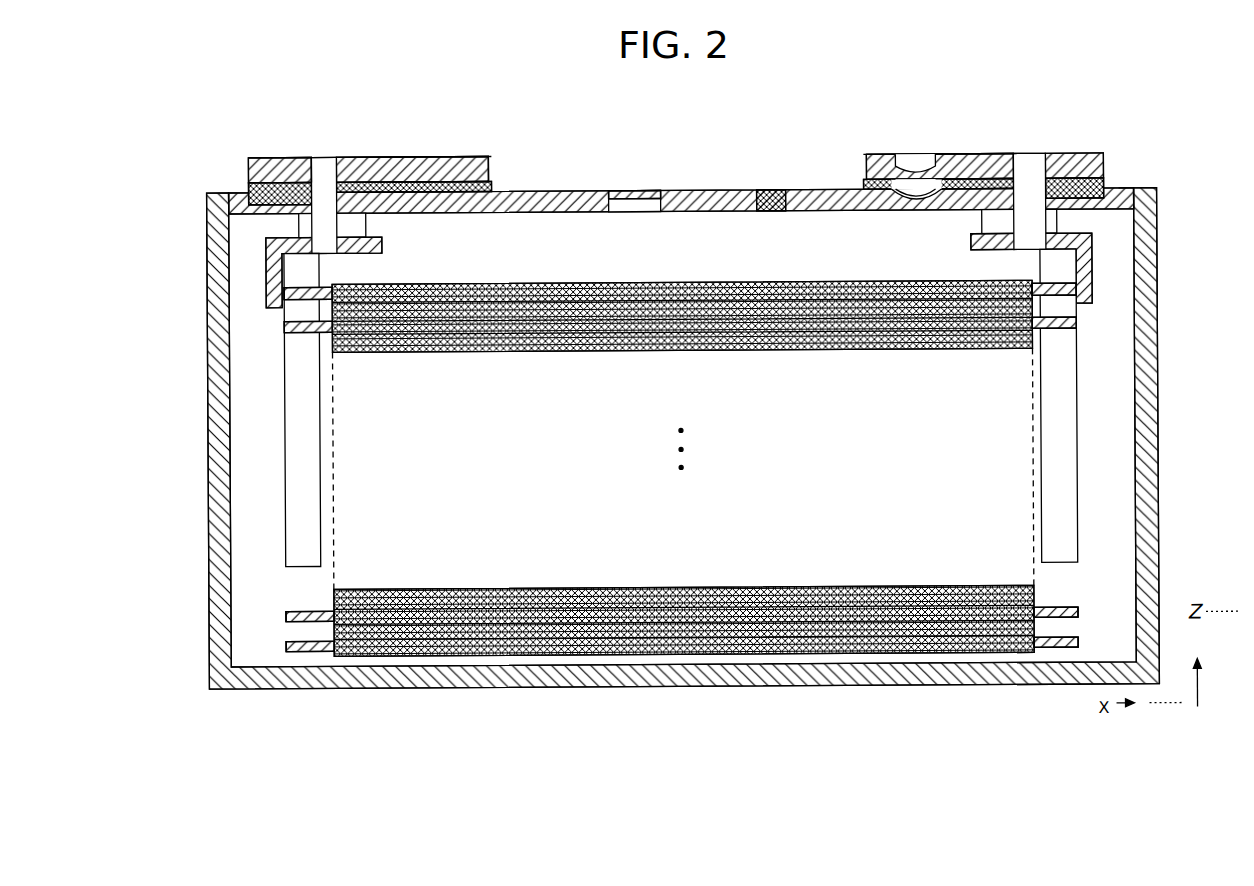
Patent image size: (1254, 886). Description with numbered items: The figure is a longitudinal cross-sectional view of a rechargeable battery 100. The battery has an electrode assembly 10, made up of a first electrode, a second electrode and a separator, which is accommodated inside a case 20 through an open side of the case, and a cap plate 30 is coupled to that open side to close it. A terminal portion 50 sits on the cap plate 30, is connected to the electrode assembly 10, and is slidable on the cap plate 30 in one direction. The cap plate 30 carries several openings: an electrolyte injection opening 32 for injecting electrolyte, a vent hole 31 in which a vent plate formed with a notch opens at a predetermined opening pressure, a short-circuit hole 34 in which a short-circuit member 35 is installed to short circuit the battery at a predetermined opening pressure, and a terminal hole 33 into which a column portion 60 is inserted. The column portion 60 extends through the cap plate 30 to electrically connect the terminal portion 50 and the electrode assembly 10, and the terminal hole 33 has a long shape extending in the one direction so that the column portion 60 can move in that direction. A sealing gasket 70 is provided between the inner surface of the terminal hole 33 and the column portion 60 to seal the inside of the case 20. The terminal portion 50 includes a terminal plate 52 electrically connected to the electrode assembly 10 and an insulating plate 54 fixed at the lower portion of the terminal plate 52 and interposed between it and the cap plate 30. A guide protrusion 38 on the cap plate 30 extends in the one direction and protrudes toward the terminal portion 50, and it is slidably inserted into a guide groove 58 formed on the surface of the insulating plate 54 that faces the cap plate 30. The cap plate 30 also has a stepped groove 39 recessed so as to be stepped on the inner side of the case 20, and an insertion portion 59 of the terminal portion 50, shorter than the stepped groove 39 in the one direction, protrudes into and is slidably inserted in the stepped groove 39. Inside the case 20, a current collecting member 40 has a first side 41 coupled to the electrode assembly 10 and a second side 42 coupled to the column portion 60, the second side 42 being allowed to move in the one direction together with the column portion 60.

The rechargeable battery 100 is at (682, 92).
The electrode assembly 10 is at (853, 660).
The case 20 is at (1158, 335).
The cap plate 30 is at (702, 191).
The vent hole 31 is at (631, 191).
The electrolyte injection opening 32 is at (771, 194).
The terminal hole 33 is at (253, 186).
The short-circuit hole 34 is at (852, 191).
The short-circuit member 35 is at (916, 212).
The guide protrusion 38 is at (251, 160).
The stepped groove 39 is at (1126, 193).
The current collecting member 40 is at (267, 271).
The first side 41 is at (300, 441).
The second side 42 is at (363, 219).
The terminal portion 50 is at (532, 84).
The terminal plate 52 is at (477, 160).
The insulating plate 54 is at (492, 160).
The guide groove 58 is at (288, 170).
The insertion portion 59 is at (385, 165).
The column portion 60 is at (327, 172).
The sealing gasket 70 is at (323, 168).